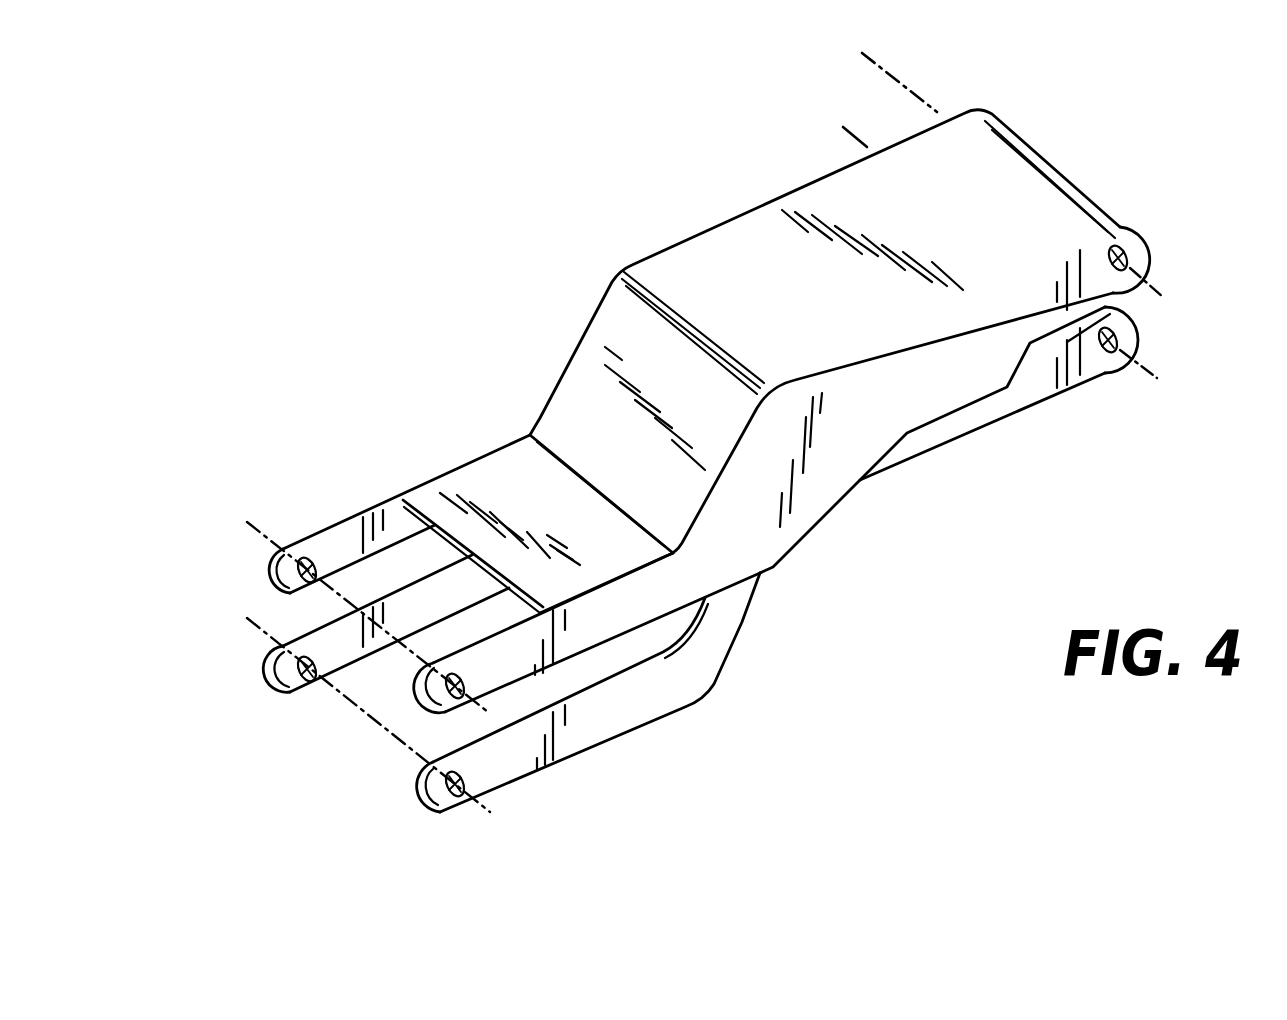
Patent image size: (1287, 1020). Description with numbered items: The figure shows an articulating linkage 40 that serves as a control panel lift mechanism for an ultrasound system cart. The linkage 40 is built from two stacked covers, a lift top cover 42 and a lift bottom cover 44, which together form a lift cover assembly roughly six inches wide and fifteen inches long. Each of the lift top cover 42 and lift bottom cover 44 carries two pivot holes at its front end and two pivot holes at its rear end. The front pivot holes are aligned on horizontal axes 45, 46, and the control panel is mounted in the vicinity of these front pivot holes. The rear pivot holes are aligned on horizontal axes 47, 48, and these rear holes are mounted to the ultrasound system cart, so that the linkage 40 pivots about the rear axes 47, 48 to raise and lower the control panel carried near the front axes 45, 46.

The articulating linkage 40 is at (538, 184).
The lift top cover 42 is at (688, 260).
The lift bottom cover 44 is at (720, 660).
The horizontal axis 45 is at (332, 598).
The horizontal axis 46 is at (372, 717).
The horizontal axis 47 is at (1153, 282).
The horizontal axis 48 is at (1143, 367).